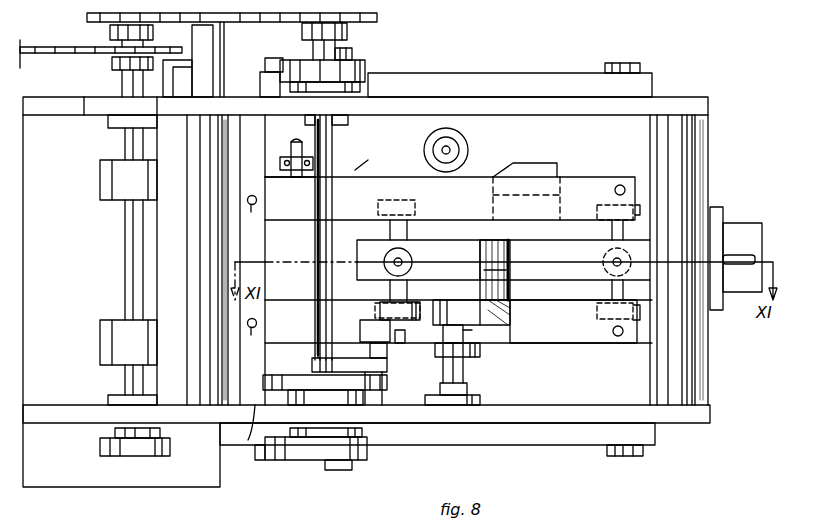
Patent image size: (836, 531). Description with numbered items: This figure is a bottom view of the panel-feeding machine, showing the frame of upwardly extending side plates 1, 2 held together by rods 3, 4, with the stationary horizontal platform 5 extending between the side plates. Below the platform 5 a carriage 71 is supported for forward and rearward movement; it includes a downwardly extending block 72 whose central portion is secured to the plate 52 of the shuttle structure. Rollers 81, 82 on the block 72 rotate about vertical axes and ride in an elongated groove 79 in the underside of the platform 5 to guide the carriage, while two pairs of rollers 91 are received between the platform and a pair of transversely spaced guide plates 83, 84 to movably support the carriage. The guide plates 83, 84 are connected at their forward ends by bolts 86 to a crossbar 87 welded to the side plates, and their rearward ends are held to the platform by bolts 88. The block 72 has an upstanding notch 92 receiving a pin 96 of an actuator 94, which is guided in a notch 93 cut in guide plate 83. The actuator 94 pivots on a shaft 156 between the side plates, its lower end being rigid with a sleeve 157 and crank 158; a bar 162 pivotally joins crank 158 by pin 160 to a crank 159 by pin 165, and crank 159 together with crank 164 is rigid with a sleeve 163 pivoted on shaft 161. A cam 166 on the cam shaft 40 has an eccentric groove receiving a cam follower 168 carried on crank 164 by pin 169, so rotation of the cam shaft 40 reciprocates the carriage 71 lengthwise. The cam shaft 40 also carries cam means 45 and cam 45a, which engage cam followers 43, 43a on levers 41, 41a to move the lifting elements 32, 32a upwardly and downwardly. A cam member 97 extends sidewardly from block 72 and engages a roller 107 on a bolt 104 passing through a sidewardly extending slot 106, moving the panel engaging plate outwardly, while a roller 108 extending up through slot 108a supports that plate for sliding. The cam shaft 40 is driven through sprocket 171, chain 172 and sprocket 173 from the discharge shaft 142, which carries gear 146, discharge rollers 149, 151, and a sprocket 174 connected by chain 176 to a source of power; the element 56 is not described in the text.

The side plate 1 is at (686, 416).
The side plate 2 is at (672, 101).
The rod 3 is at (666, 377).
The rod 4 is at (195, 267).
The platform 5 is at (367, 158).
The lifting element 32 is at (262, 460).
The lifting element 32a is at (266, 66).
The cam shaft 40 is at (318, 292).
The lever 41 is at (432, 437).
The lever 41a is at (443, 82).
The cam follower 43 is at (328, 470).
The cam follower 43a is at (352, 54).
The cam means 45 is at (358, 452).
The cam 45a is at (307, 58).
The plate 52 is at (718, 218).
The coupling housing 56 is at (735, 302).
The carriage 71 is at (548, 285).
The block 72 is at (440, 255).
The groove 79 is at (290, 210).
The roller 81 is at (387, 250).
The roller 82 is at (604, 253).
The guide plate 83 is at (522, 343).
The guide plate 84 is at (603, 185).
The bolt 86 is at (253, 260).
The crossbar 87 is at (246, 128).
The bolt 88 is at (615, 183).
The roller 91 is at (416, 203).
The notch 92 is at (500, 253).
The notch 93 is at (424, 350).
The actuator 94 is at (575, 321).
The pin 96 is at (484, 271).
The cam member 97 is at (535, 172).
The bolt 104 is at (440, 152).
The slot 106 is at (432, 132).
The roller 107 is at (462, 152).
The roller 108 is at (304, 156).
The slot 108a is at (298, 148).
The shaft 142 is at (128, 272).
The gear 146 is at (103, 455).
The discharge roller 149 is at (108, 335).
The discharge roller 151 is at (100, 177).
The pivot shaft 156 is at (466, 372).
The sleeve 157 is at (466, 330).
The crank 158 is at (443, 366).
The crank 159 is at (360, 336).
The pivot pin 160 is at (466, 355).
The shaft 161 is at (372, 322).
The bar 162 is at (433, 340).
The sleeve 163 is at (370, 350).
The crank 164 is at (316, 360).
The pivot pin 165 is at (408, 330).
The cam 166 is at (266, 398).
The cam follower 168 is at (310, 380).
The pin 169 is at (318, 348).
The sprocket 171 is at (332, 28).
The chain 172 is at (226, 24).
The sprocket 173 is at (153, 42).
The sprocket 174 is at (112, 47).
The chain 176 is at (52, 44).